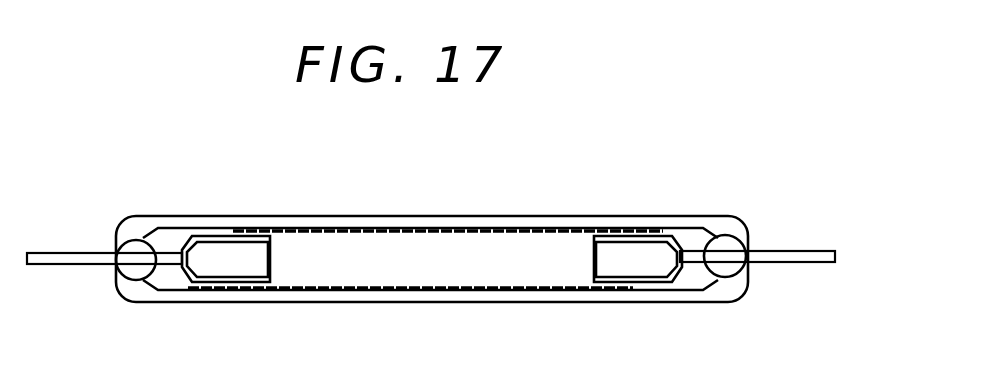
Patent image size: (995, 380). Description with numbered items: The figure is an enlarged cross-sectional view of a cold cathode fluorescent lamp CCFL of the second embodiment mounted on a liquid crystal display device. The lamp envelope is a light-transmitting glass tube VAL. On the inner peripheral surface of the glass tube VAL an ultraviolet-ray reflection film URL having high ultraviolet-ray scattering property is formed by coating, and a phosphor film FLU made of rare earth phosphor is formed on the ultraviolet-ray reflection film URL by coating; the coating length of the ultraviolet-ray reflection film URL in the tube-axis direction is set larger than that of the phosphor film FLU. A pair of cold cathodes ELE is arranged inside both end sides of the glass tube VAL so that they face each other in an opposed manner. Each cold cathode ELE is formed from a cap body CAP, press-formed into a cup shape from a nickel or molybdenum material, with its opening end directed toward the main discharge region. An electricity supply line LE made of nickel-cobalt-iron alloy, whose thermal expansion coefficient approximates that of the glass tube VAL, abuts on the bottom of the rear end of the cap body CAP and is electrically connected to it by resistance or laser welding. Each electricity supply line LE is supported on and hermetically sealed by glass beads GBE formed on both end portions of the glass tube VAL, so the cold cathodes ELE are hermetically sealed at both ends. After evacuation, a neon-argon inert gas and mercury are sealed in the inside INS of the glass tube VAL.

The cold cathode fluorescent lamp CCFL is at (431, 246).
The electricity supply line LE is at (78, 253).
The glass bead GBE is at (129, 271).
The cold cathode ELE is at (274, 248).
The cap body CAP is at (243, 266).
The inside of the glass tube INS is at (473, 242).
The ultraviolet-ray reflection film URL is at (632, 228).
The phosphor film FLU is at (363, 290).
The light-transmitting glass tube VAL is at (483, 297).